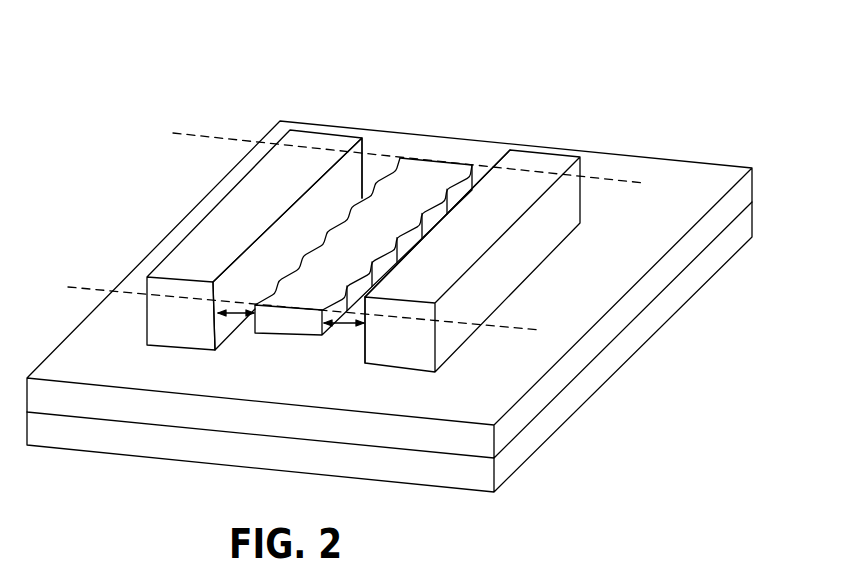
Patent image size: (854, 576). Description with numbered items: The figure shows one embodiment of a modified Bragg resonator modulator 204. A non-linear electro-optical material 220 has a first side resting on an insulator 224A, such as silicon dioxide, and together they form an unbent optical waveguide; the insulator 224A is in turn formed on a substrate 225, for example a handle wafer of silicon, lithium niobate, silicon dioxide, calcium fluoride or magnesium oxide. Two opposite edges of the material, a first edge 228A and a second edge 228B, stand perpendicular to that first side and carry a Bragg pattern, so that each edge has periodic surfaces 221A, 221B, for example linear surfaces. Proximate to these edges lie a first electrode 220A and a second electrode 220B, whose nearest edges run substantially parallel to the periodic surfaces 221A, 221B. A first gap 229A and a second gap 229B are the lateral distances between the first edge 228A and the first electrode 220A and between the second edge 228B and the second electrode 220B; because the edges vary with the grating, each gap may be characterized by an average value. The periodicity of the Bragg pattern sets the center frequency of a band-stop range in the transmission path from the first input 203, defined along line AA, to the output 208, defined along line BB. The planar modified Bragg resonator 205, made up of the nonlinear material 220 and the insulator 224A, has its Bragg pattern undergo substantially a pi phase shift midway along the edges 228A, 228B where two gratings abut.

The modified Bragg resonator modulator 204 is at (463, 29).
The substrate 225 is at (312, 466).
The insulator 224A is at (250, 425).
The first electrode 220A is at (265, 225).
The second electrode 220B is at (483, 249).
The non-linear electro-optical material 220 is at (349, 201).
The periodic surfaces of first edge 221A is at (358, 202).
The periodic surfaces of second edge 221B is at (400, 246).
The first edge 228A is at (323, 235).
The second edge 228B is at (452, 178).
The output 208 is at (443, 158).
The first gap 229A is at (234, 308).
The second gap 229B is at (367, 297).
The first input 203 is at (273, 327).
The modified Bragg resonator 205 is at (317, 332).